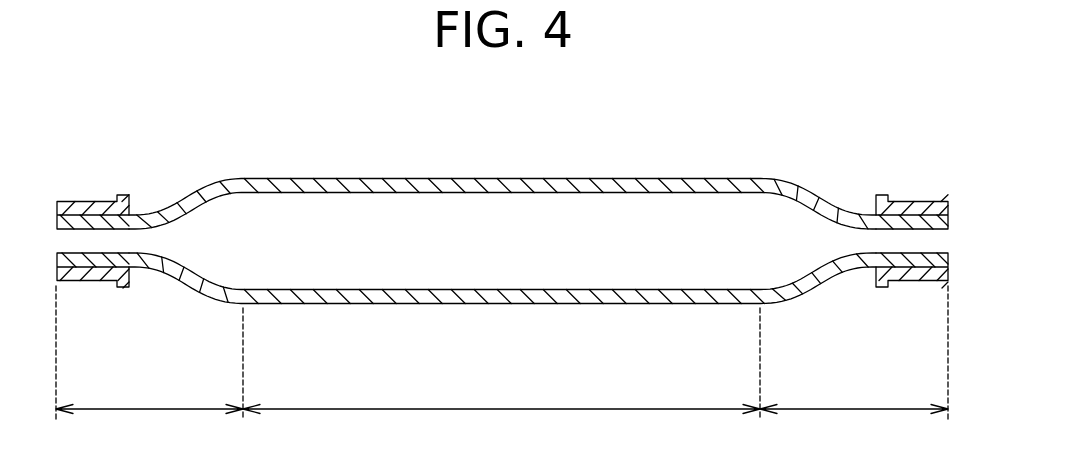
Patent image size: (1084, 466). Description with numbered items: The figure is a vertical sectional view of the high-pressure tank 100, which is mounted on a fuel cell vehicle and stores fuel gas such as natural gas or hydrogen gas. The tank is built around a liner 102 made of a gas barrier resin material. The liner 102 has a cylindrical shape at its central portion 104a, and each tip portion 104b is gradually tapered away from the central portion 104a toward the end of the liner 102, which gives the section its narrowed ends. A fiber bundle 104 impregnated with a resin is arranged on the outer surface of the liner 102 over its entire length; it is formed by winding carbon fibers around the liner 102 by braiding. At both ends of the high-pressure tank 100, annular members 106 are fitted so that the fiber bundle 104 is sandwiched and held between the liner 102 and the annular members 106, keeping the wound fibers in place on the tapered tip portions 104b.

The high-pressure tank 100 is at (831, 87).
The liner 102 is at (652, 230).
The fiber bundle 104 is at (822, 207).
The central portion 104a is at (501, 380).
The tip portion 104b is at (502, 370).
The annular member 106 is at (83, 285).